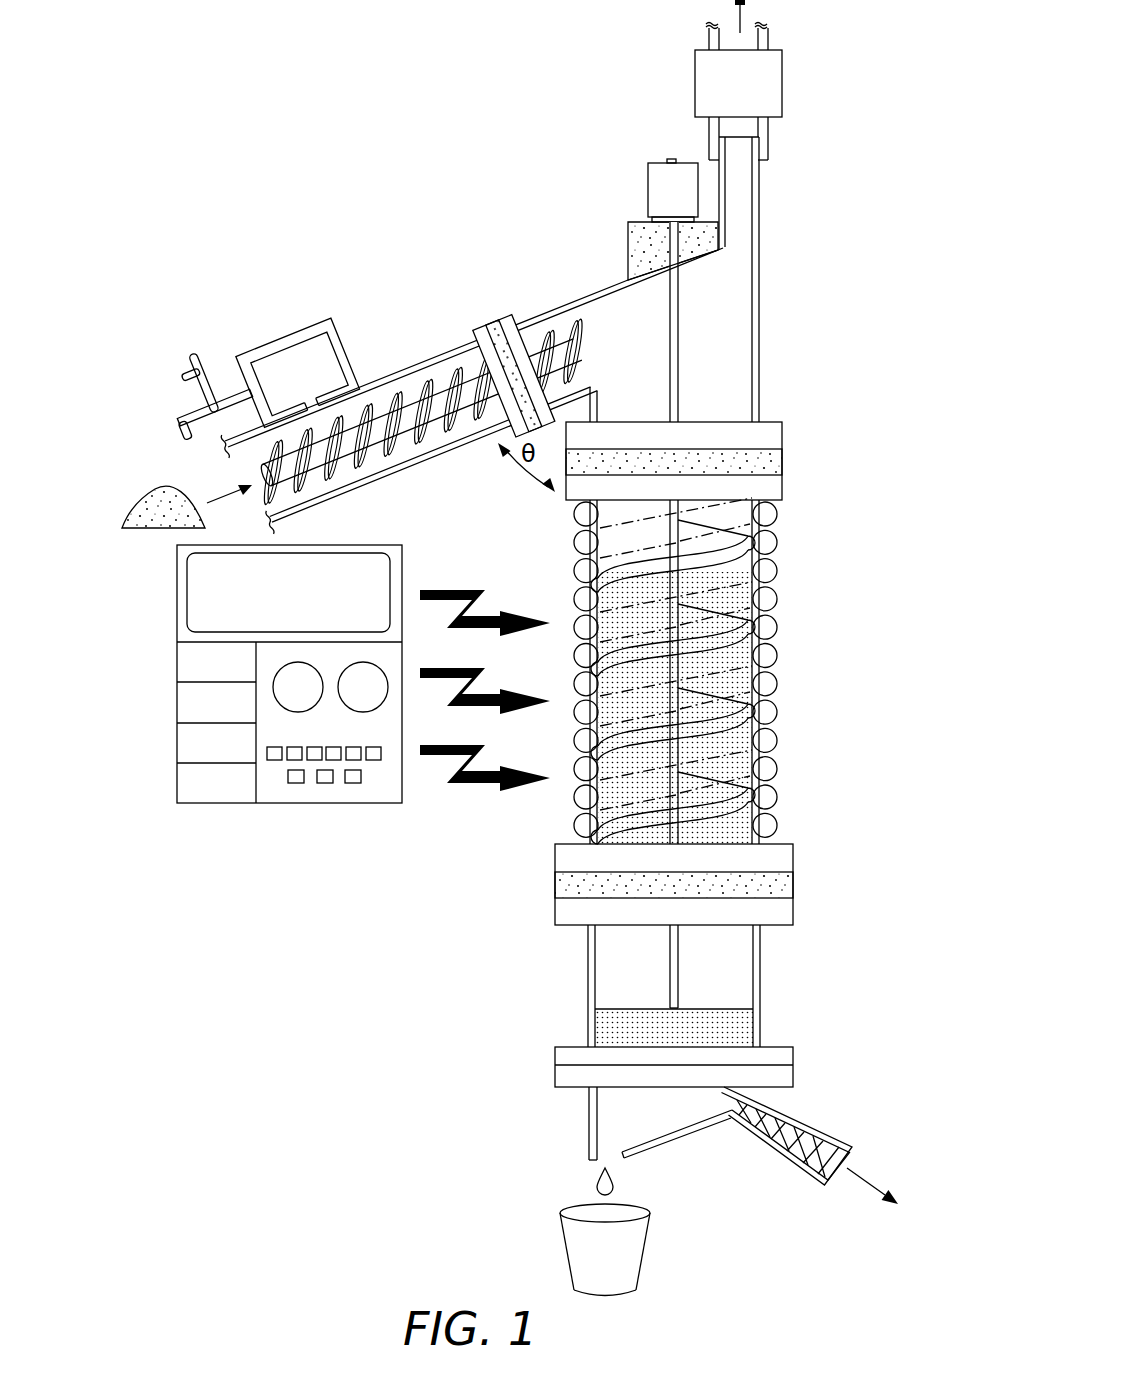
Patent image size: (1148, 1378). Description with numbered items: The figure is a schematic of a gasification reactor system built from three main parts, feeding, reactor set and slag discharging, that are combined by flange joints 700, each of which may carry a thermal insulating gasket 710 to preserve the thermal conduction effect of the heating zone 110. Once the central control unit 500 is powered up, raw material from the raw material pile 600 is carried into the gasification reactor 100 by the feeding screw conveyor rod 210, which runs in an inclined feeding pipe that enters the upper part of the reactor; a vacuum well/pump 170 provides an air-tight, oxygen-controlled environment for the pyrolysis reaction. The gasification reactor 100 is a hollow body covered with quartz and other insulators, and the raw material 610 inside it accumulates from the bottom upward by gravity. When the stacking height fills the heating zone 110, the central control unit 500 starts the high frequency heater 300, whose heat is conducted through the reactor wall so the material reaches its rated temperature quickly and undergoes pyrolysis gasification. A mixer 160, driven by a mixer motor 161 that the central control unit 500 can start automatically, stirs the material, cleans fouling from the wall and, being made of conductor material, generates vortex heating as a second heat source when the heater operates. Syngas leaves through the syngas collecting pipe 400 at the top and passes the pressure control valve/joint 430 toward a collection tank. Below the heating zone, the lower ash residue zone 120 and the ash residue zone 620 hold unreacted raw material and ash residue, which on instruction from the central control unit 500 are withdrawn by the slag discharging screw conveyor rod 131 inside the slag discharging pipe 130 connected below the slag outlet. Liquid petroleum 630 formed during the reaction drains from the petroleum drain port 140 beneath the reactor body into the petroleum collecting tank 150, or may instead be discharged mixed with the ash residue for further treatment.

The gasification reactor 100 is at (800, 625).
The heating zone 110 is at (723, 545).
The ash residue zone 120 is at (618, 970).
The slag discharging pipe 130 is at (817, 1115).
The slag discharging screw conveyor rod 131 is at (828, 1168).
The petroleum drain port 140 is at (608, 1158).
The petroleum collecting tank 150 is at (573, 1240).
The mixer 160 is at (746, 403).
The mixer motor 161 is at (652, 183).
The vacuum well/pump 170 is at (288, 340).
The feeding screw conveyor rod 210 is at (370, 457).
The high frequency heater 300 is at (372, 803).
The syngas collecting pipe 400 is at (745, 192).
The pressure control valve/joint 430 is at (777, 68).
The central control unit 500 is at (185, 660).
The raw material pile 600 is at (158, 490).
The raw material 610 is at (735, 748).
The ash residue zone 620 is at (745, 1028).
The petroleum 630 is at (593, 1172).
The flange joint 700 is at (505, 318).
The thermal insulating gasket 710 is at (492, 325).